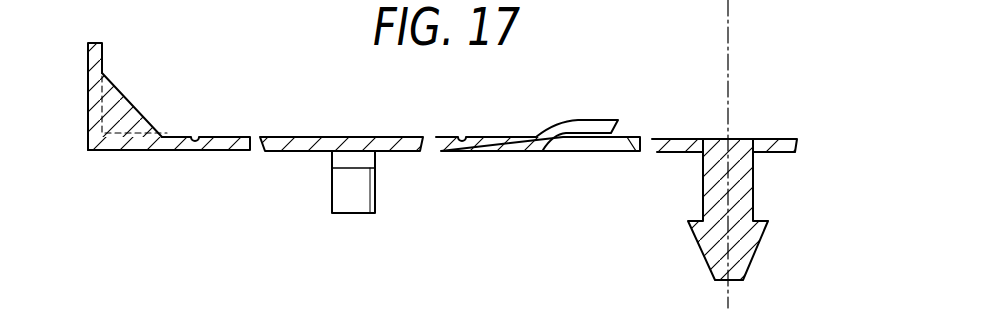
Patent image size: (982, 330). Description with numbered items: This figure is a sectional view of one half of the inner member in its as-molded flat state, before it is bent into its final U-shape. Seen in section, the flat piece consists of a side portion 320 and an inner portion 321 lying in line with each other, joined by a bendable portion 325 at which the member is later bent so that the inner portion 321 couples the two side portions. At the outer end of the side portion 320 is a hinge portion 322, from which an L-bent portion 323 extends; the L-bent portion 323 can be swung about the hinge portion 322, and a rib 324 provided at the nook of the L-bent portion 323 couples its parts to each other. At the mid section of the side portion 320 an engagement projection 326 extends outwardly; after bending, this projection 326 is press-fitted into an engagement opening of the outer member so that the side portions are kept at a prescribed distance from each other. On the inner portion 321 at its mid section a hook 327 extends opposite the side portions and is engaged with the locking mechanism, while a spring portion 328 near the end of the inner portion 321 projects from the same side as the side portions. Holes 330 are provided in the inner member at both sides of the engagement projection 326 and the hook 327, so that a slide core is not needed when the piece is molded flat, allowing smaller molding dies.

The side portion 320 is at (300, 136).
The inner portion 321 is at (660, 139).
The hinge portion 322 is at (195, 152).
The L-bent portion 323 is at (104, 51).
The rib 324 is at (125, 105).
The bendable portion 325 is at (465, 152).
The engagement projection 326 is at (360, 197).
The hook 327 is at (745, 200).
The spring portion 328 is at (587, 120).
The hole 330 is at (701, 139).